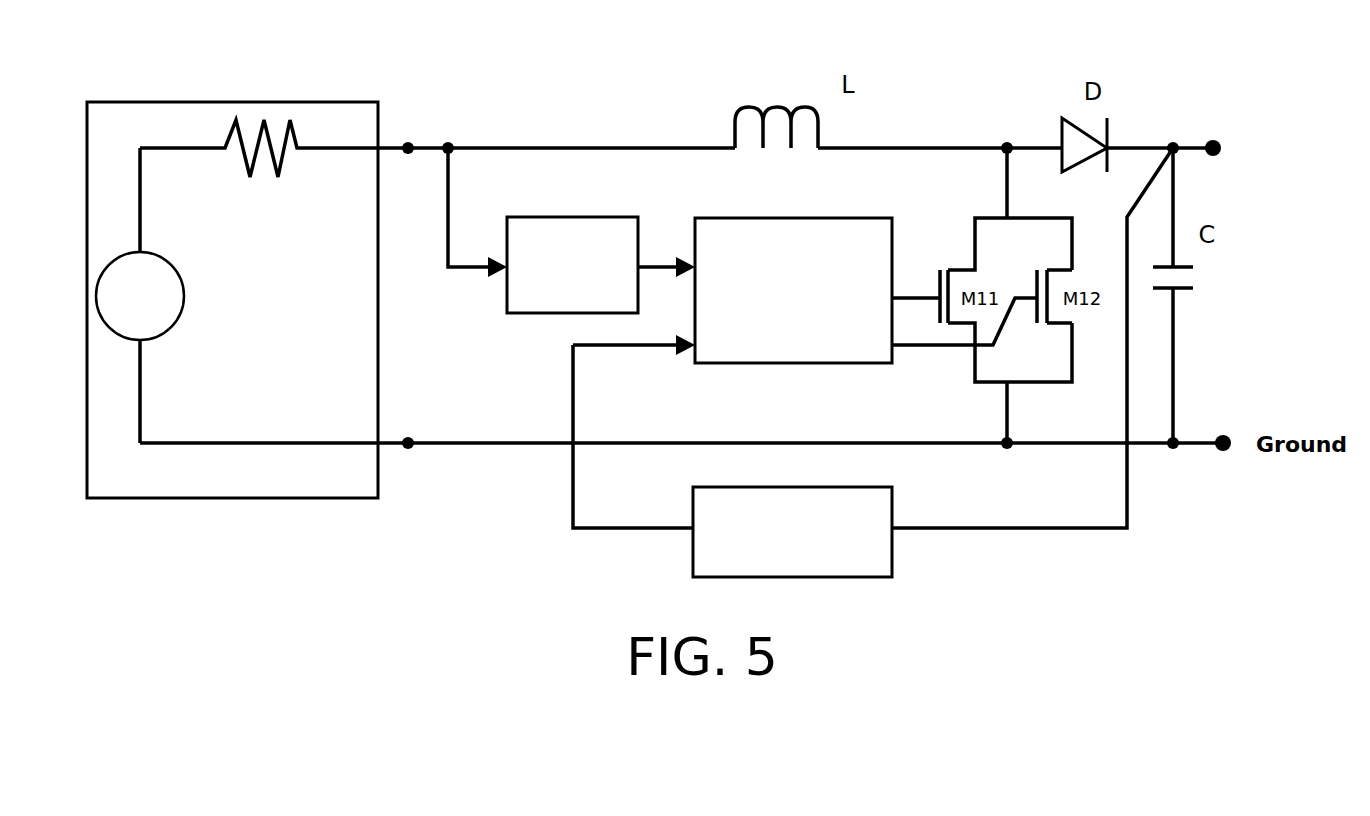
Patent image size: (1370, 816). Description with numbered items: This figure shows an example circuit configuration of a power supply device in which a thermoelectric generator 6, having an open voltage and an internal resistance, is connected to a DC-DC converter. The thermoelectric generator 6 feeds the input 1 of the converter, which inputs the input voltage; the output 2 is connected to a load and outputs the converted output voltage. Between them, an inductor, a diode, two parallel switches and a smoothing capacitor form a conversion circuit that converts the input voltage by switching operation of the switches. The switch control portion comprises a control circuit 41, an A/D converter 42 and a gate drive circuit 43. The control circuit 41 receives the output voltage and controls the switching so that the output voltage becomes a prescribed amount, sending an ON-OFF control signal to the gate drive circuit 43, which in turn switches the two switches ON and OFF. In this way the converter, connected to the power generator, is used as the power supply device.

The input 1 is at (412, 140).
The output 2 is at (1218, 142).
The thermoelectric generator 6 is at (330, 102).
The control circuit 41 is at (868, 578).
The A/D converter 42 is at (548, 315).
The gate drive circuit 43 is at (848, 365).